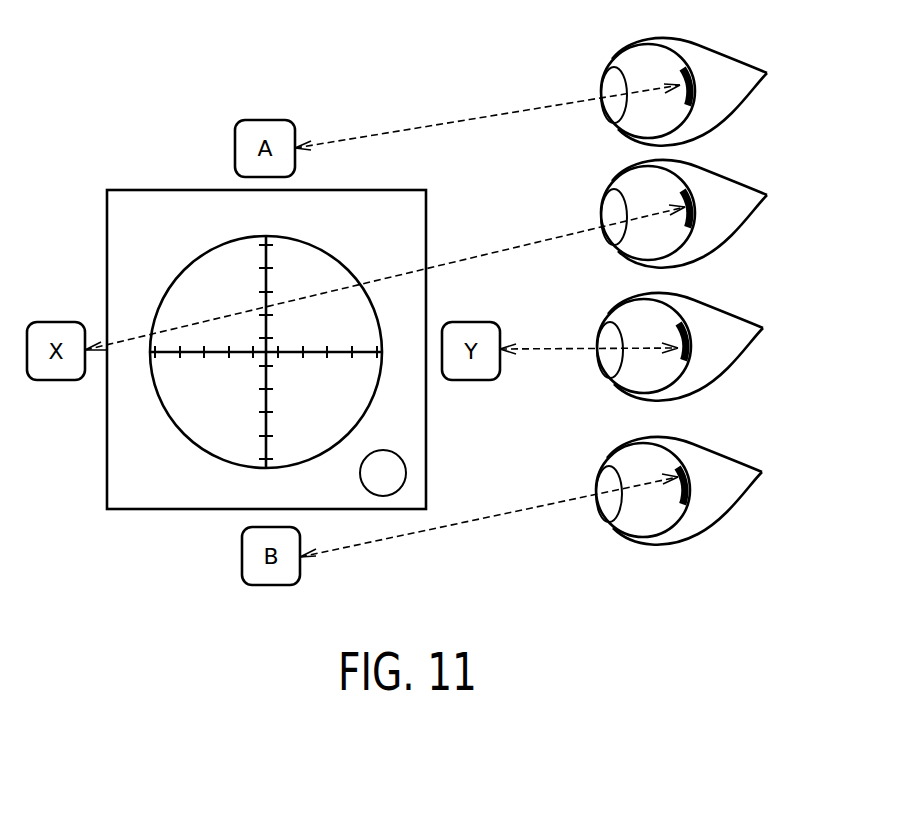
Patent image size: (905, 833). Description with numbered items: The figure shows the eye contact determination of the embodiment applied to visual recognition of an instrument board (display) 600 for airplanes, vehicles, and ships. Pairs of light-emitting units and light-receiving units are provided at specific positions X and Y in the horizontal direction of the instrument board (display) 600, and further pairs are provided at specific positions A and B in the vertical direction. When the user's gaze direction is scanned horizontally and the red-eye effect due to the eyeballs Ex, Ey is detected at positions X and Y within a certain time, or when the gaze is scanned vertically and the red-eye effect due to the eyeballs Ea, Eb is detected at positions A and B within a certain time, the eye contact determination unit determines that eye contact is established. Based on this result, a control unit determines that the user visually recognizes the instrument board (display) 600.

The instrument board (display) 600 is at (151, 190).
The eyeball Ea is at (684, 89).
The eyeball Ex is at (684, 208).
The eyeball Ey is at (680, 345).
The eyeball Eb is at (679, 487).